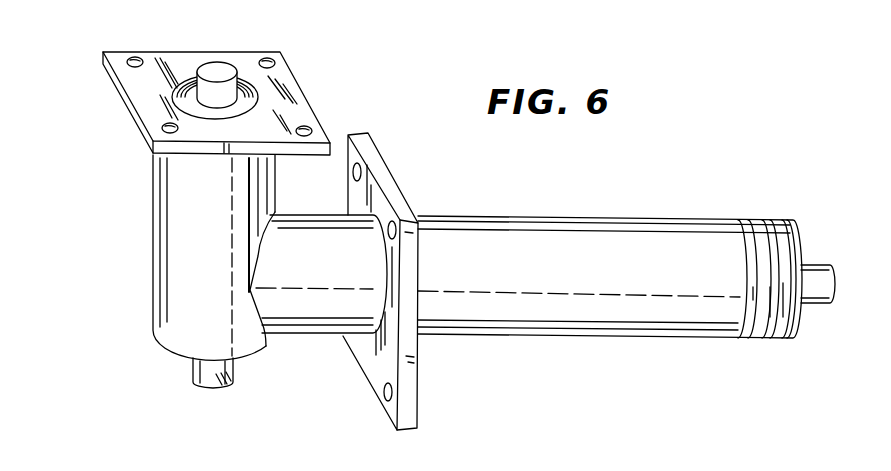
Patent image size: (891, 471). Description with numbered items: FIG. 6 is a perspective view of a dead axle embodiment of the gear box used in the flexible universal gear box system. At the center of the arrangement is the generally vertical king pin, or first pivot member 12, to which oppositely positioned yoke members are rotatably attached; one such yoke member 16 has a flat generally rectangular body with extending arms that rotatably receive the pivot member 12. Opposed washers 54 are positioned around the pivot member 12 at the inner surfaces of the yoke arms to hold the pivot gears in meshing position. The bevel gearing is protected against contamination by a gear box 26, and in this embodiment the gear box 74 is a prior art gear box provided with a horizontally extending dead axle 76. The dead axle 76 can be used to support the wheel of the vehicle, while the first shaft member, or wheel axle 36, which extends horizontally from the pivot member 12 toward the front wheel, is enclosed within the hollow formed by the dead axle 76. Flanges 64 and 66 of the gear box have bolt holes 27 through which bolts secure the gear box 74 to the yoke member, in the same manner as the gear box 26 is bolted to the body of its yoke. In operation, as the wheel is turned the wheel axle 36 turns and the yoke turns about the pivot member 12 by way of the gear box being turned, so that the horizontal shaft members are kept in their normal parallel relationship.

The first pivot member 12 is at (216, 72).
The yoke member 16 is at (293, 95).
The gear box 26 is at (490, 318).
The bolt holes 27 is at (166, 135).
The first shaft member 36 is at (822, 263).
The opposed washers 54 is at (183, 102).
The flange 64 is at (412, 414).
The flange 66 is at (281, 77).
The prior art gear box 74 is at (388, 117).
The dead axle 76 is at (710, 223).